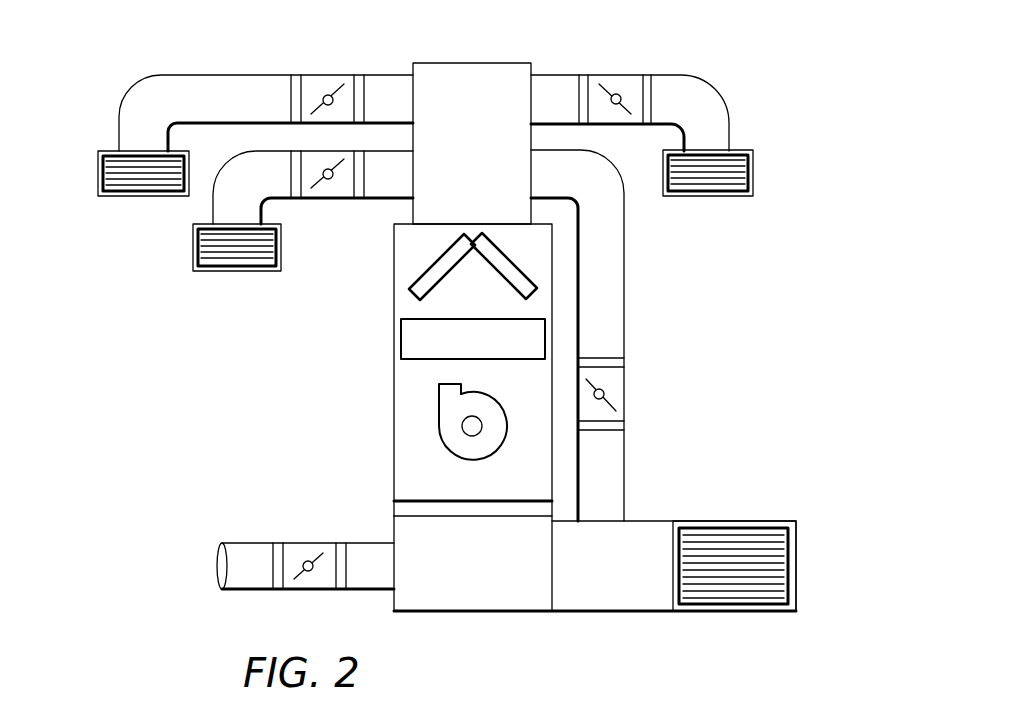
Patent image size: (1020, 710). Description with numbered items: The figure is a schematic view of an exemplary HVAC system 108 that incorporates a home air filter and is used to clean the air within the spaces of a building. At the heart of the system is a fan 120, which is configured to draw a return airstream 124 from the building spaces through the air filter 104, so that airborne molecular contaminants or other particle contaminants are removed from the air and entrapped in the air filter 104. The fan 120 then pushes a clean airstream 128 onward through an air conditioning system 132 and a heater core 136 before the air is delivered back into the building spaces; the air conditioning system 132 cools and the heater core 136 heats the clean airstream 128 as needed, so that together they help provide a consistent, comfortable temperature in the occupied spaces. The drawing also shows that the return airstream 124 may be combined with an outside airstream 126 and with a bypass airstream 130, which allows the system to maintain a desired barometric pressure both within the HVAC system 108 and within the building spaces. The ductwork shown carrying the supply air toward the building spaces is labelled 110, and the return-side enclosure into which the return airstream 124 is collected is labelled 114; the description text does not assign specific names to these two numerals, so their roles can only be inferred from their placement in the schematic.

The air filter 104 is at (400, 509).
The HVAC system 108 is at (728, 38).
The supply duct 110 is at (117, 125).
The return plenum 114 is at (633, 600).
The fan 120 is at (444, 434).
The return airstream 124 is at (770, 563).
The outside airstream 126 is at (216, 565).
The clean airstream 128 is at (205, 243).
The bypass airstream 130 is at (625, 303).
The air conditioning system 132 is at (423, 273).
The heater core 136 is at (412, 332).